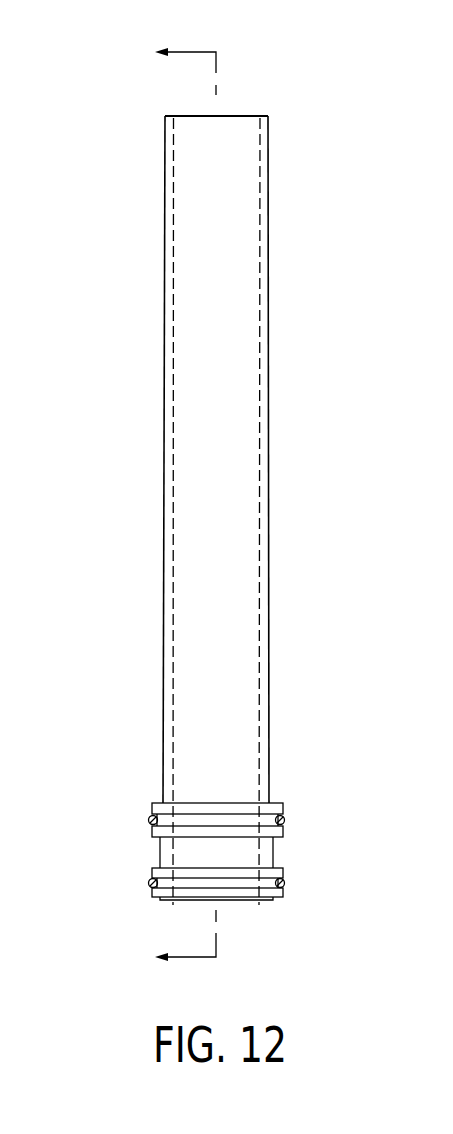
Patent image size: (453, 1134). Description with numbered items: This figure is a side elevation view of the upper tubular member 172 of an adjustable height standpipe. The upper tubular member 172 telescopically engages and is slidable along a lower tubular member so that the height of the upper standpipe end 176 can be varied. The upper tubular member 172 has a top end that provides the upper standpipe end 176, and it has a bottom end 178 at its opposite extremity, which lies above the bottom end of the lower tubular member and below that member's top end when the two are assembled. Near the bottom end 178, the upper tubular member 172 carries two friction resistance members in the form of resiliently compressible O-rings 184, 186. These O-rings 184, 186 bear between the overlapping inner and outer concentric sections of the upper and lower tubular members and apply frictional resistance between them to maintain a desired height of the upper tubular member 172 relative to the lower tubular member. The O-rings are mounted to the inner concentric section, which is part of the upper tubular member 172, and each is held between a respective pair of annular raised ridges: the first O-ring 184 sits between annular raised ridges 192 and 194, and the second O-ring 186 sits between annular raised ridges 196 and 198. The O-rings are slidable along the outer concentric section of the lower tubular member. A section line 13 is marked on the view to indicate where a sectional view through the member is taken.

The section line 13- 13 is at (185, 507).
The upper tubular member 172 is at (165, 305).
The upper standpipe end 176 is at (190, 116).
The bottom end 178 is at (172, 898).
The O-ring 184 is at (284, 820).
The O-ring 186 is at (284, 881).
The annular raised ridge 192 is at (150, 808).
The annular raised ridge 194 is at (150, 828).
The annular raised ridge 196 is at (148, 866).
The annular raised ridge 198 is at (148, 890).